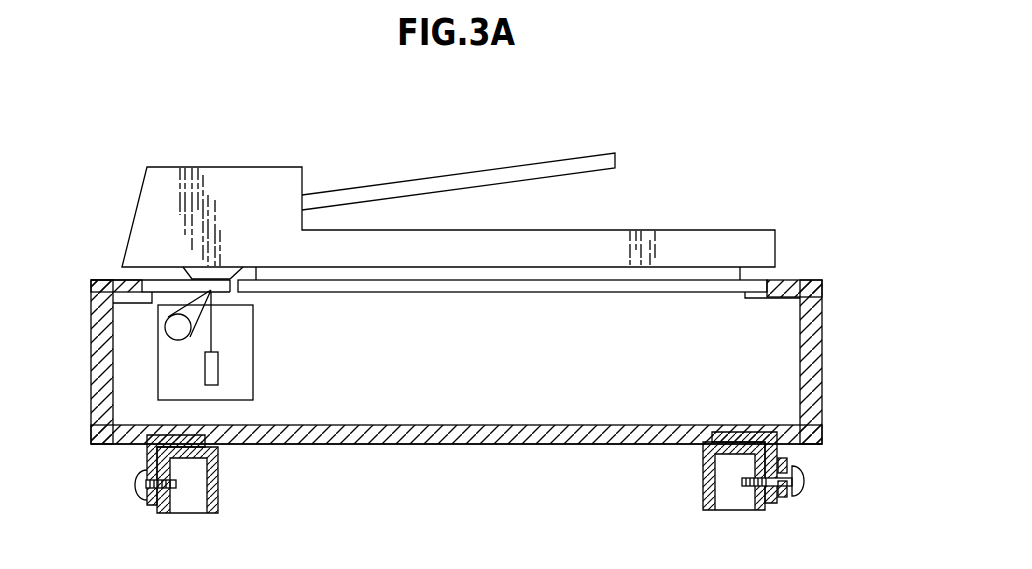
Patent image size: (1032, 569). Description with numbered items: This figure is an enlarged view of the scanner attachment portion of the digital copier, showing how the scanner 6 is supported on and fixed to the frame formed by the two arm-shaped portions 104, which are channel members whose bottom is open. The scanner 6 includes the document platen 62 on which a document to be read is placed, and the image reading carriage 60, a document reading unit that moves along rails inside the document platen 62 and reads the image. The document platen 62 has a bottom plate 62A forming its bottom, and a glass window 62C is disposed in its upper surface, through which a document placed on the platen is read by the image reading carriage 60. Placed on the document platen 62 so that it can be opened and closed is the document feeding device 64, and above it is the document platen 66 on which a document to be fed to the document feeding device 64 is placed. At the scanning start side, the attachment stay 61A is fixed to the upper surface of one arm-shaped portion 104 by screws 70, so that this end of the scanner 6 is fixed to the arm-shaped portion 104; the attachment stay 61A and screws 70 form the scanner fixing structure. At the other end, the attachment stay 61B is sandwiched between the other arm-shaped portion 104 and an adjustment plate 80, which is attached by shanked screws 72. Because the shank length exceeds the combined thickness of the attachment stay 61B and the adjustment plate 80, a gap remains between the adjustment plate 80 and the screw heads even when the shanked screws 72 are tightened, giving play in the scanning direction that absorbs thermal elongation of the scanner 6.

The scanner 6 is at (838, 341).
The image reading carriage 60 is at (244, 352).
The attachment stay 61A is at (147, 448).
The attachment stay 61B is at (780, 448).
The document platen 62 is at (463, 447).
The bottom plate 62A is at (532, 447).
The glass window 62C is at (523, 293).
The document feeding device 64 is at (218, 177).
The document platen 66 is at (462, 182).
The screws 70 is at (135, 483).
The shanked screws 72 is at (803, 480).
The adjustment plate 80 is at (785, 497).
The arm-shaped portion 104 is at (220, 485).